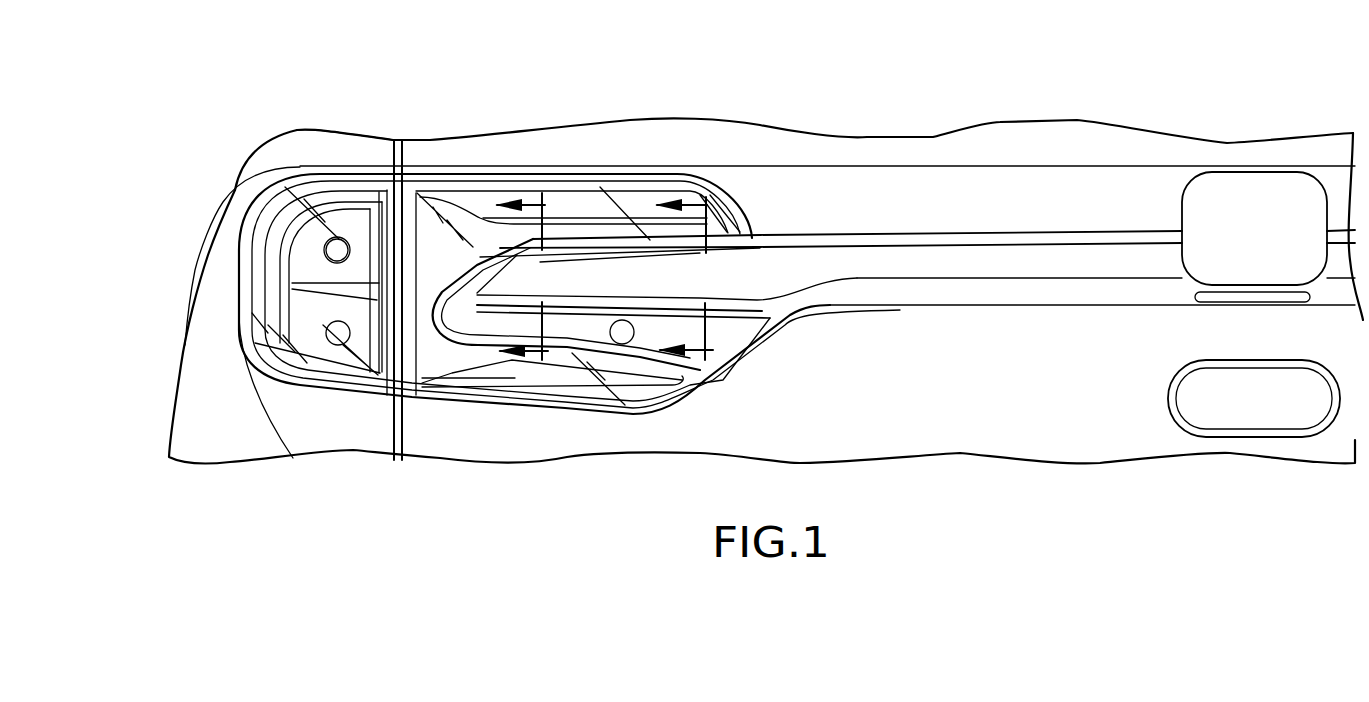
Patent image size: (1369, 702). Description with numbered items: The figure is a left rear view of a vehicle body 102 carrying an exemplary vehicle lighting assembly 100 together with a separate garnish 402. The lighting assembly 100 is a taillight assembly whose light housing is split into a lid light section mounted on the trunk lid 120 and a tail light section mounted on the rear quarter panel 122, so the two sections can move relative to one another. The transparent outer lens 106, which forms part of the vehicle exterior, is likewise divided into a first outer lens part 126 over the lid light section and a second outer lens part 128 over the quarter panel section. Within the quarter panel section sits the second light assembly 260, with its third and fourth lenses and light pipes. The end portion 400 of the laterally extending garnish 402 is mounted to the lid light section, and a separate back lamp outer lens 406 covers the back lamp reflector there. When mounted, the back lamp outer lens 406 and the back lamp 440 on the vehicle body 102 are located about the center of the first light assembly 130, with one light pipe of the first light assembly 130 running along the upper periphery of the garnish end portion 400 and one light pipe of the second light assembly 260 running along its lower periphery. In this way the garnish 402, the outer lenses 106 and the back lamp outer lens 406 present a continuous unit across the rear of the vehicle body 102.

The vehicle lighting assembly 100 is at (368, 431).
The vehicle body 102 is at (953, 166).
The outer lens 106 is at (427, 177).
The trunk lid 120 is at (870, 162).
The rear quarter panel 122 is at (206, 347).
The first outer lens part 126 is at (630, 183).
The second outer lens part 128 is at (255, 234).
The first light assembly 130 is at (573, 150).
The second light assembly 260 is at (305, 140).
The end portion 400 is at (660, 273).
The garnish 402 is at (893, 282).
The back lamp outer lens 406 is at (693, 358).
The back lamp 440 is at (619, 345).